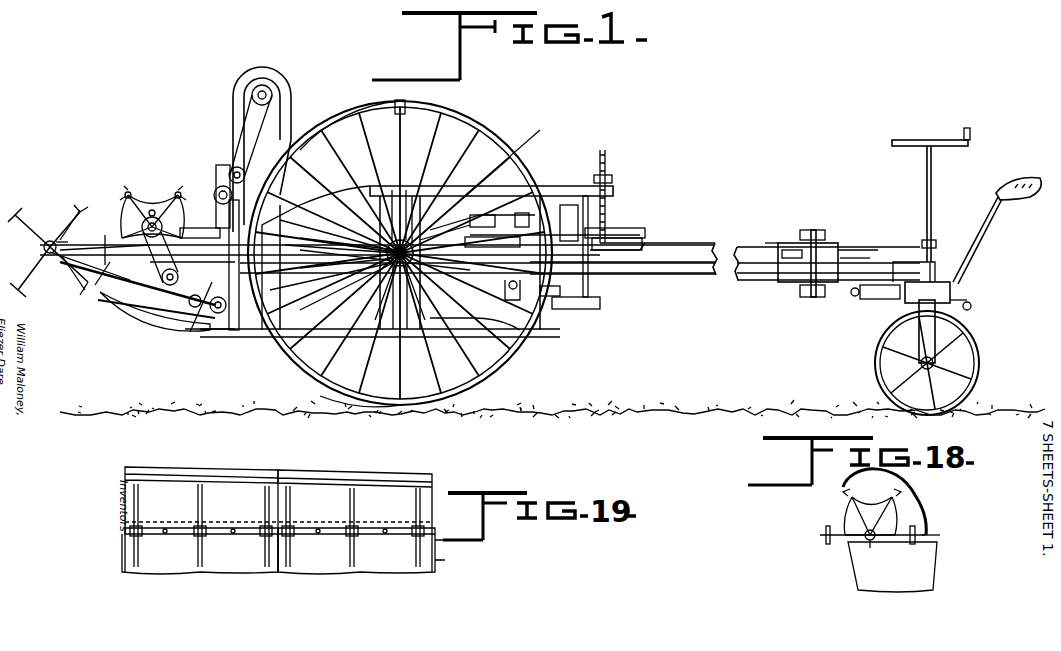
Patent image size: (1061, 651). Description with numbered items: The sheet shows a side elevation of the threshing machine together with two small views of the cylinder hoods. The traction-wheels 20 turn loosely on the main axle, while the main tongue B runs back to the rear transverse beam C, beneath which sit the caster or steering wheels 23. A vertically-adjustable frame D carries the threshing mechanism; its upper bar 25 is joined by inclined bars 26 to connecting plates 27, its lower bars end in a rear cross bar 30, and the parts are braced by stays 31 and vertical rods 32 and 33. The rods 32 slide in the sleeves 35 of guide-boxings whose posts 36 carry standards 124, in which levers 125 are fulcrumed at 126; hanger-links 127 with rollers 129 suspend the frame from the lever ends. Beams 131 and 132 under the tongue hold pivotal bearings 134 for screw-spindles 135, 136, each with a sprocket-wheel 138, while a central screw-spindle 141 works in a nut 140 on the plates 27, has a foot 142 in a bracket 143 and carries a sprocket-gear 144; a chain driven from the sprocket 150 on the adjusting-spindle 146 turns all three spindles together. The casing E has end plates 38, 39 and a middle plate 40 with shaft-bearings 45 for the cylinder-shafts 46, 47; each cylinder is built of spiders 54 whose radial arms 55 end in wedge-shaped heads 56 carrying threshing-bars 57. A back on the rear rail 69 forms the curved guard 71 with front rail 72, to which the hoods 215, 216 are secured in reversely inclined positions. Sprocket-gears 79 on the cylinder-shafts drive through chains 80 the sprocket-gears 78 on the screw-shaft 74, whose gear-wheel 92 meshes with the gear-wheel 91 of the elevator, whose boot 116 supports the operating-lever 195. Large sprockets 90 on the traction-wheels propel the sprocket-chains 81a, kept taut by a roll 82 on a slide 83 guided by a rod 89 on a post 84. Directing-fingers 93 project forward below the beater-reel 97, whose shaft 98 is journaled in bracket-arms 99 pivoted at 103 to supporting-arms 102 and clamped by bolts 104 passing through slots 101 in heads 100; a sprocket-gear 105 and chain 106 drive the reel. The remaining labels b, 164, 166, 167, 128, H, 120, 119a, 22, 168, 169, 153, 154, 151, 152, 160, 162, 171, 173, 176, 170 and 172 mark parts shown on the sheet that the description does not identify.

In FIG. 1, the traction-wheels 20 is at (503, 127).
In FIG. 1, the large sprockets 90 is at (402, 113).
In FIG. 1, the sprocket-chains 81a is at (358, 114).
In FIG. 1, the inclined bars 26 is at (558, 185).
In FIG. 1, the vertically-adjustable frame D is at (366, 190).
In FIG. 1, the gear-wheel 91 is at (265, 339).
In FIG. 1, the main tongue B is at (682, 243).
In FIG. 1, the pole top b is at (708, 244).
In FIG. 1, the pole rail 164 is at (672, 276).
In FIG. 1, the connecting plates 27 is at (585, 185).
In FIG. 1, the rear cross bar 30 is at (600, 309).
In FIG. 1, the central screw-spindle 141 is at (606, 150).
In FIG. 1, the nut 140 is at (612, 178).
In FIG. 1, the vertical rods 33 is at (569, 223).
In FIG. 1, the screw-spindle 135 is at (580, 235).
In FIG. 1, the sprocket-gear 144 is at (615, 228).
In FIG. 1, the bracket 143 is at (625, 240).
In FIG. 1, the foot 142 is at (630, 249).
In FIG. 1, the transverse beam 131 is at (555, 297).
In FIG. 1, the pivotal bearings 134 is at (513, 300).
In FIG. 1, the frame member 166 is at (468, 319).
In FIG. 1, the hub post 167 is at (396, 330).
In FIG. 1, the beam 132 is at (482, 250).
In FIG. 1, the sprocket 150 is at (440, 270).
In FIG. 1, the vertically-adjusting spindle 146 is at (490, 222).
In FIG. 1, the sprocket-wheel 138 is at (526, 220).
In FIG. 1, the rod 128 is at (488, 212).
In FIG. 1, the rollers 129 is at (468, 224).
In FIG. 1, the upper bar 25 is at (414, 200).
In FIG. 1, the short standards 124 is at (407, 195).
In FIG. 1, the fulcrum 126 is at (392, 195).
In FIG. 1, the levers 125 is at (320, 230).
In FIG. 1, the rod H is at (350, 247).
In FIG. 1, the upstanding post 36 is at (347, 235).
In FIG. 1, the sleeves 35 is at (347, 263).
In FIG. 1, the hanger-links 127 is at (332, 279).
In FIG. 1, the stays 31 is at (360, 280).
In FIG. 1, the vertical rods 32 is at (400, 292).
In FIG. 1, the screw-spindle 136 is at (525, 160).
In FIG. 1, the belt housing 120 is at (292, 100).
In FIG. 1, the elevator boot 116 is at (262, 83).
In FIG. 1, the rod 89 is at (235, 166).
In FIG. 1, the slide 83 is at (220, 167).
In FIG. 1, the roll 82 is at (214, 194).
In FIG. 1, the vertical post 84 is at (241, 265).
In FIG. 1, the curved guard 71 is at (218, 244).
In FIG. 18, the curved guard 71 is at (940, 535).
In FIG. 1, the operating-lever 195 is at (205, 228).
In FIG. 1, the rear rail 69 is at (220, 262).
In FIG. 1, the cylinder-shaft 47 is at (152, 215).
In FIG. 19, the cylinder-shaft 47 is at (380, 535).
In FIG. 18, the cylinder-shaft 47 is at (870, 548).
In FIG. 1, the radial arms 55 is at (198, 186).
In FIG. 19, the radial arms 55 is at (196, 495).
In FIG. 18, the radial arms 55 is at (848, 497).
In FIG. 1, the threshing bars 57 is at (180, 192).
In FIG. 19, the threshing bars 57 is at (236, 485).
In FIG. 18, the threshing bars 57 is at (826, 536).
In FIG. 1, the wedge-shaped heads 56 is at (110, 211).
In FIG. 1, the spiders 54 is at (126, 215).
In FIG. 18, the spiders 54 is at (870, 510).
In FIG. 1, the sprocket-gears 79 is at (157, 202).
In FIG. 1, the sprocket-chains 80 is at (165, 285).
In FIG. 1, the directing-fingers 93 is at (120, 283).
In FIG. 1, the end plate 39 is at (172, 331).
In FIG. 19, the end plate 39 is at (444, 550).
In FIG. 18, the end plate 39 is at (938, 563).
In FIG. 1, the casing E is at (110, 304).
In FIG. 1, the sprocket-gears 78 is at (192, 320).
In FIG. 1, the screw-shaft 74 is at (215, 313).
In FIG. 1, the pin 119a is at (222, 330).
In FIG. 1, the gear-wheel 92 is at (203, 332).
In FIG. 1, the beater-reel shaft 98 is at (43, 245).
In FIG. 1, the beater-reel 97 is at (60, 238).
In FIG. 1, the sprocket-gear 105 is at (57, 232).
In FIG. 1, the bracket-arms 99 is at (95, 247).
In FIG. 1, the enlarged heads 100 is at (105, 235).
In FIG. 1, the pivot 103 is at (78, 210).
In FIG. 1, the bolt 104 is at (80, 262).
In FIG. 1, the curved slots 101 is at (80, 270).
In FIG. 1, the chain 106 is at (82, 292).
In FIG. 1, the supporting-arms 102 is at (98, 290).
In FIG. 1, the caster or steering wheels 23 is at (980, 357).
In FIG. 1, the fork 22 is at (918, 339).
In FIG. 1, the rear transverse beam C is at (948, 285).
In FIG. 1, the block 168 is at (905, 262).
In FIG. 1, the pin 169 is at (938, 268).
In FIG. 1, the crank shaft 153 is at (932, 182).
In FIG. 1, the handle 154 is at (902, 140).
In FIG. 1, the handle bar 151 is at (985, 228).
In FIG. 1, the grip 152 is at (1022, 178).
In FIG. 1, the nut 160 is at (972, 305).
In FIG. 1, the bolt 162 is at (960, 303).
In FIG. 1, the bracket 171 is at (830, 243).
In FIG. 1, the plate 173 is at (813, 230).
In FIG. 1, the nut 176 is at (822, 233).
In FIG. 1, the clamp 170 is at (795, 248).
In FIG. 1, the bar 172 is at (850, 243).
In FIG. 19, the hood 216 is at (208, 473).
In FIG. 19, the hood 215 is at (335, 476).
In FIG. 18, the hood 215 is at (915, 484).
In FIG. 19, the front rail 72 is at (124, 522).
In FIG. 18, the front rail 72 is at (920, 530).
In FIG. 19, the cylinder-shaft 46 is at (222, 535).
In FIG. 19, the end plate 38 is at (122, 548).
In FIG. 19, the middle plate 40 is at (280, 554).
In FIG. 18, the shaft-bearings 45 is at (866, 540).